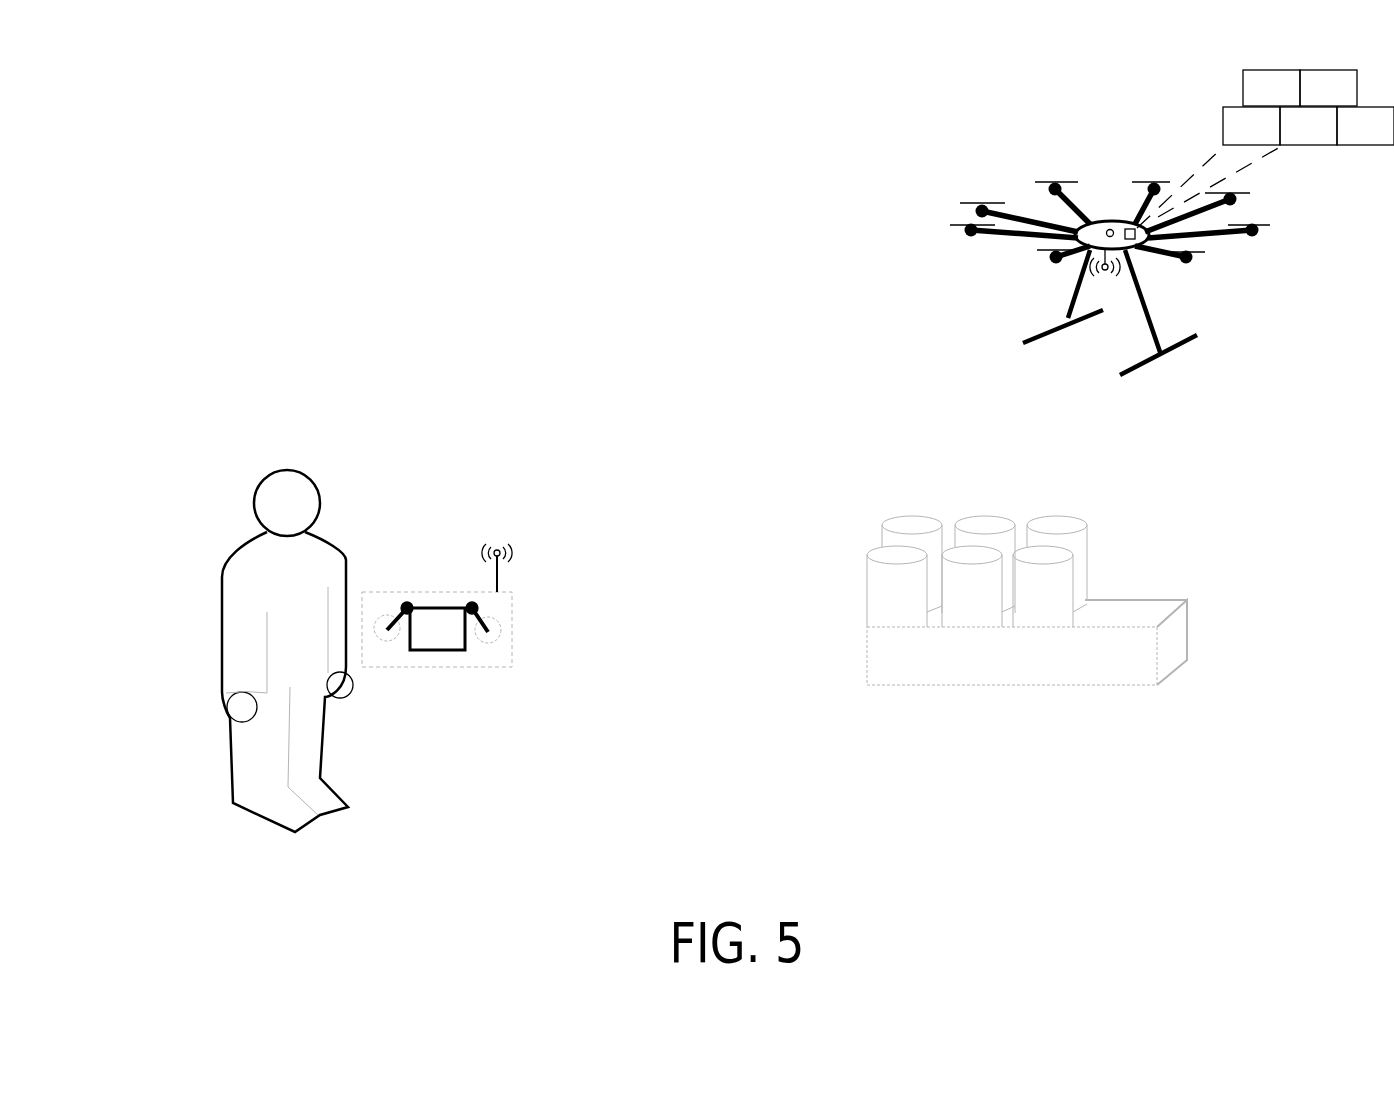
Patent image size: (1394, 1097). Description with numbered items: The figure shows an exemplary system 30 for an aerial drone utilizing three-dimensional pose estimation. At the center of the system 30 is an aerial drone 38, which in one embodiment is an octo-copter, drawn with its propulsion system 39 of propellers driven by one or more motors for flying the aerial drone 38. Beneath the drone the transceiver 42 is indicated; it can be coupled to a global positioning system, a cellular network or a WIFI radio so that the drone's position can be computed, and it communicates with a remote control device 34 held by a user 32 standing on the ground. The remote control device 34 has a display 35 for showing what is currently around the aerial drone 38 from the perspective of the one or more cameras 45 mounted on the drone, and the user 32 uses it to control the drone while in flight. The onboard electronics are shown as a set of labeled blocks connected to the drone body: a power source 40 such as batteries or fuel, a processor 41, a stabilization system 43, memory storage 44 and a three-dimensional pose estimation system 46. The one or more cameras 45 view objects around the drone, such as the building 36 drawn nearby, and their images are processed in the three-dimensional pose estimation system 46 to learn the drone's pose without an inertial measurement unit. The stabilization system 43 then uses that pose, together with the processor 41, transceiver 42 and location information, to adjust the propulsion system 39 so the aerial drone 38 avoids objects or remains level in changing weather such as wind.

The system 30 is at (738, 118).
The user 32 is at (220, 512).
The remote control device 34 is at (473, 655).
The display 35 is at (427, 620).
The building 36 is at (972, 672).
The aerial drone 38 is at (1143, 258).
The propulsion system 39 is at (988, 197).
The power source 40 is at (1254, 101).
The processor 41 is at (1311, 101).
The transceiver 42 is at (1110, 280).
The stabilization system 43 is at (1234, 140).
The memory storage 44 is at (1291, 140).
The one or more cameras 45 is at (1111, 221).
The three-dimensional pose estimation system 46 is at (1348, 140).